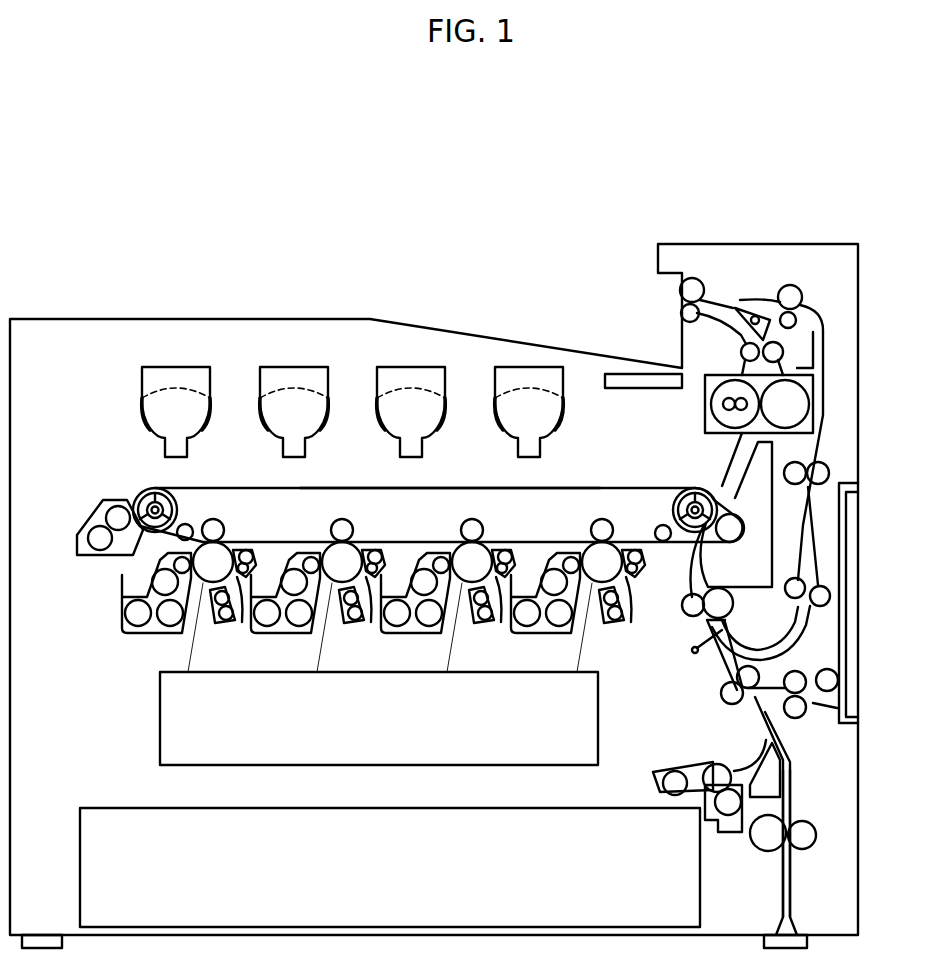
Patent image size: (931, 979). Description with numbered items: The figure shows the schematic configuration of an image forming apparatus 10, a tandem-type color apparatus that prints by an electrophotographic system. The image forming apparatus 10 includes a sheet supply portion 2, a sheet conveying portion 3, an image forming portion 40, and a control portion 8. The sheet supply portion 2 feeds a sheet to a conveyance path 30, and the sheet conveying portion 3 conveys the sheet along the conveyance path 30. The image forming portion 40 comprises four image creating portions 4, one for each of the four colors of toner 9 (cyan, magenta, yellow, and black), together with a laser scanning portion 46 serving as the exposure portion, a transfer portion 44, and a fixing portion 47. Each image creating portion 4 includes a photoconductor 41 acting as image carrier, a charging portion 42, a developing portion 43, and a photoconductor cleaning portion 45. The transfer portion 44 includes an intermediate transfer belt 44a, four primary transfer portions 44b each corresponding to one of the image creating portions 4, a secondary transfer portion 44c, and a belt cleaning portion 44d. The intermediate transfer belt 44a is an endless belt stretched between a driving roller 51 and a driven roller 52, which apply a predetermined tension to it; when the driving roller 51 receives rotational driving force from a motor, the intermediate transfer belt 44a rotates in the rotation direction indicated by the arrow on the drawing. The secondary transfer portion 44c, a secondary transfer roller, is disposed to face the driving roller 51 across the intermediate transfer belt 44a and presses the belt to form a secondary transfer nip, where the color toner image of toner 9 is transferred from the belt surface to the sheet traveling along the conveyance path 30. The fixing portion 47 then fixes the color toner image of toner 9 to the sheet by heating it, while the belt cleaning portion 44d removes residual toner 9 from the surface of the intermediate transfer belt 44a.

The image forming apparatus 10 is at (582, 202).
The sheet supply portion 2 is at (727, 861).
The sheet conveying portion 3 is at (824, 806).
The image creating portion 4 is at (203, 524).
The control portion 8 is at (633, 374).
The toner 9 is at (213, 434).
The conveyance path 30 is at (713, 678).
The image forming portion 40 is at (466, 512).
The photoconductor 41 is at (242, 622).
The charging portion 42 is at (224, 628).
The developing portion 43 is at (168, 634).
The transfer portion 44 is at (519, 487).
The intermediate transfer belt 44a is at (612, 487).
The primary transfer portion 44b is at (200, 508).
The secondary transfer portion 44c is at (744, 530).
The belt cleaning portion 44d is at (90, 556).
The photoconductor cleaning portion 45 is at (258, 556).
The laser scanning portion 46 is at (600, 729).
The fixing portion 47 is at (813, 385).
The driving roller 51 is at (680, 491).
The driven roller 52 is at (143, 493).